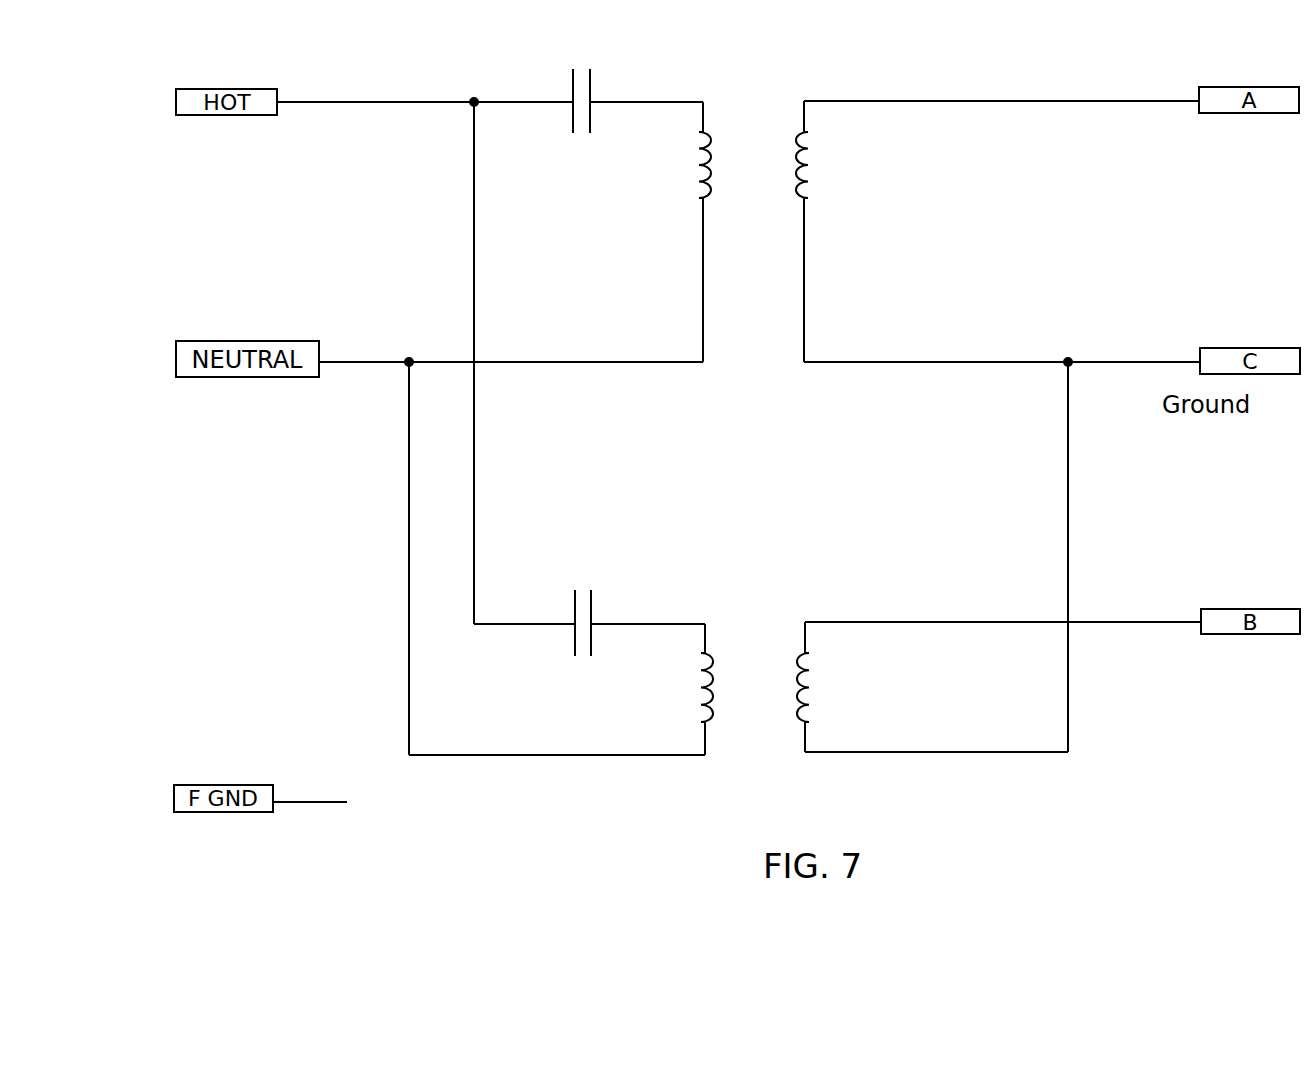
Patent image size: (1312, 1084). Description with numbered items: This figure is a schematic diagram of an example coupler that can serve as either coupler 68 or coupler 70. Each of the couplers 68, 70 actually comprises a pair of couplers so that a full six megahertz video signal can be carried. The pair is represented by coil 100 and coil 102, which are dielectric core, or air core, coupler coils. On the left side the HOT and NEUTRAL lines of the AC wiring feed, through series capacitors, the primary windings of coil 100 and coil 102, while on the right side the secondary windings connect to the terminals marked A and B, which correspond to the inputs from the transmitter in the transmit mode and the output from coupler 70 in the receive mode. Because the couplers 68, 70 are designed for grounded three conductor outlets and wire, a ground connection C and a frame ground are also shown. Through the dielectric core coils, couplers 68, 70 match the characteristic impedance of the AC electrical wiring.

The coil 100 is at (737, 173).
The coil 102 is at (737, 687).
The coupler 68 is at (835, 425).
The coupler 70 is at (835, 425).